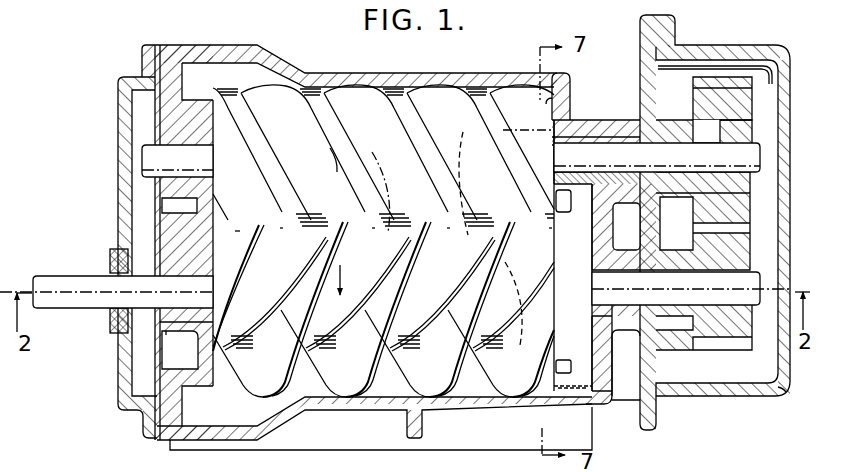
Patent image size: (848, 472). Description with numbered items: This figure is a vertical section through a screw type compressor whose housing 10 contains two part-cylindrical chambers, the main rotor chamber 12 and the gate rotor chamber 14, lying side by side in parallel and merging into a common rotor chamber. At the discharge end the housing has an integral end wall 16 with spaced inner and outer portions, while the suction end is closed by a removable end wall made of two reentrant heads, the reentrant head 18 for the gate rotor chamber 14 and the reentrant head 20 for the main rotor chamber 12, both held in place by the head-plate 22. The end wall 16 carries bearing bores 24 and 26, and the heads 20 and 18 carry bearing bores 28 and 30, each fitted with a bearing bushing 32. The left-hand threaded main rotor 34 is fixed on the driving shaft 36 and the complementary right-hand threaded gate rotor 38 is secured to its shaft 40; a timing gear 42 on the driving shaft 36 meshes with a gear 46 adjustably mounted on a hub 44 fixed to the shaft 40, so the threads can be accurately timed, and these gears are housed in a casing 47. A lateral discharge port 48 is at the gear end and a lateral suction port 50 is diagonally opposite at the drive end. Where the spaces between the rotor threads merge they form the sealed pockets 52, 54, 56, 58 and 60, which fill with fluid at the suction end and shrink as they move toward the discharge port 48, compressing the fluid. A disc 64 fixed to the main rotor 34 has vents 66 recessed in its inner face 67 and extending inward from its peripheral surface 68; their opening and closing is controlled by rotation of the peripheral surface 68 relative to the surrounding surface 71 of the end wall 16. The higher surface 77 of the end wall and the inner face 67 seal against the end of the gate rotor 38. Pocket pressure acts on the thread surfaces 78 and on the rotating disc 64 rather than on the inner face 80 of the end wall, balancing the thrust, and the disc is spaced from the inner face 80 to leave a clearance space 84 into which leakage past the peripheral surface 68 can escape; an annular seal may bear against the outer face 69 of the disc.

The housing 10 is at (212, 440).
The main rotor chamber 12 is at (313, 380).
The gate rotor chamber 14 is at (438, 110).
The end wall 16 is at (598, 352).
The reentrant head 18 is at (183, 112).
The reentrant head 20 is at (177, 345).
The head-plate 22 is at (118, 249).
The bearing bore 24 is at (619, 312).
The bearing bore 26 is at (612, 140).
The bearing bore 28 is at (165, 324).
The bearing bore 30 is at (170, 136).
The bearing bushing 32 is at (170, 183).
The main rotor 34 is at (495, 370).
The driving shaft 36 is at (71, 280).
The gate rotor 38 is at (478, 100).
The shaft 40 is at (768, 142).
The timing gear 42 is at (745, 326).
The hub 44 is at (755, 122).
The gear 46 is at (755, 97).
The casing 47 is at (778, 388).
The discharge port 48 is at (420, 174).
The suction port 50 is at (362, 152).
The pocket 52 is at (537, 227).
The pocket 54 is at (460, 225).
The pocket 56 is at (385, 227).
The pocket 58 is at (293, 227).
The pocket 60 is at (225, 230).
The disc 64 is at (547, 255).
The vent 66 is at (554, 195).
The inner face 67 is at (495, 306).
The peripheral surface 68 is at (598, 404).
The outer face 69 is at (598, 249).
The surrounding surface 71 is at (560, 396).
The surface 77 is at (566, 93).
The thread surfaces 78 is at (240, 305).
The inner face 80 is at (606, 360).
The clearance space 84 is at (603, 214).